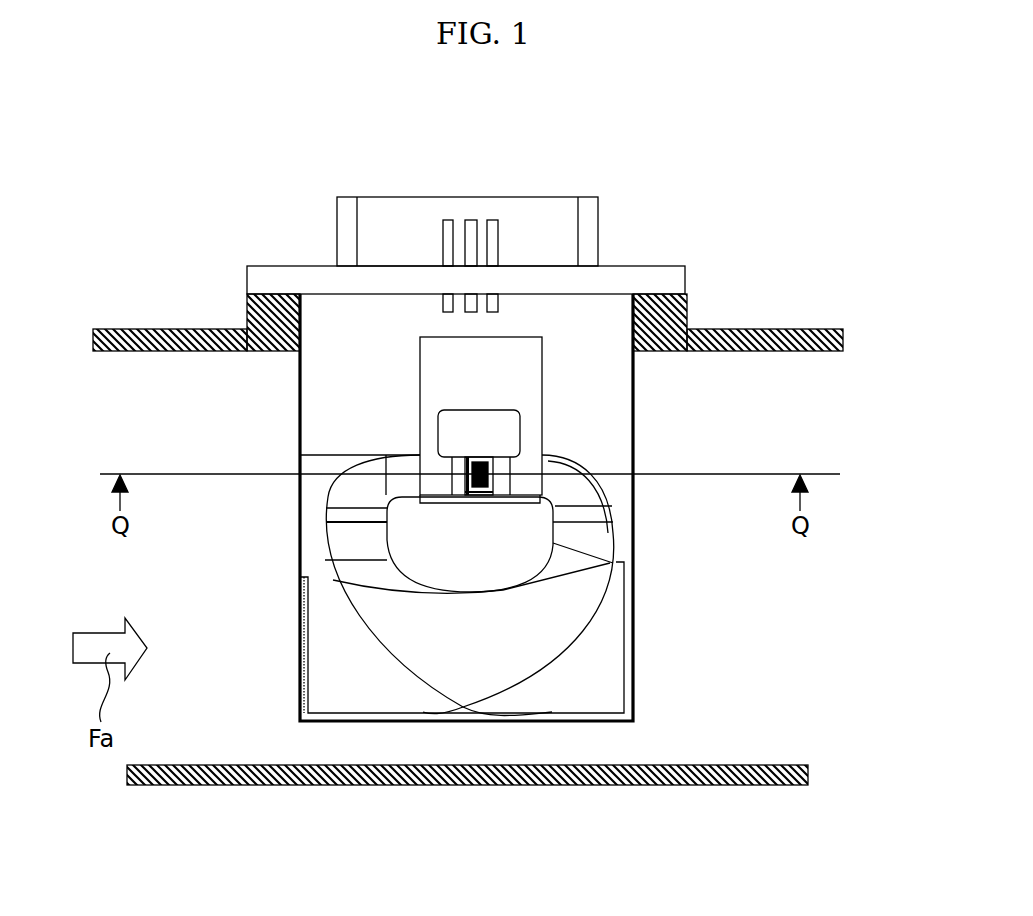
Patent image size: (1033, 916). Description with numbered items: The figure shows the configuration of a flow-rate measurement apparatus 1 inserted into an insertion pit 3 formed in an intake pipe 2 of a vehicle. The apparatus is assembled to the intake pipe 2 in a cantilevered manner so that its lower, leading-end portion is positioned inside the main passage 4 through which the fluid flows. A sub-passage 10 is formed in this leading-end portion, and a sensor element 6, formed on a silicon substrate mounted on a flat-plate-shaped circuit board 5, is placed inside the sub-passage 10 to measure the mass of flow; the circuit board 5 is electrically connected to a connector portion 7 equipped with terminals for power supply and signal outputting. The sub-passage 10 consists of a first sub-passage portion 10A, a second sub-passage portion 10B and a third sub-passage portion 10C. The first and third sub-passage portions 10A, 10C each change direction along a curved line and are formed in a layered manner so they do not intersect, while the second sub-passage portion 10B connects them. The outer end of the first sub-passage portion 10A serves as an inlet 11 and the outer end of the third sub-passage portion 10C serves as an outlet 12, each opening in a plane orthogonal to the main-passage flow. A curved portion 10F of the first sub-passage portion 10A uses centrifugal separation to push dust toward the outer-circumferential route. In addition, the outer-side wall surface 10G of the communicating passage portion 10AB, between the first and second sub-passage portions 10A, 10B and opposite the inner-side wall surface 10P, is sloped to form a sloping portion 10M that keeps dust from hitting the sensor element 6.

The flow-rate measurement apparatus 1 is at (272, 265).
The intake pipe 2 is at (783, 329).
The insertion pit 3 is at (630, 317).
The main passage 4 is at (125, 370).
The circuit board 5 is at (420, 370).
The sensor element 6 is at (470, 470).
The connector portion 7 is at (536, 197).
The sub-passage 10 is at (325, 663).
The first sub-passage portion 10A is at (575, 597).
The communicating passage portion 10AB is at (578, 508).
The second sub-passage portion 10B is at (540, 473).
The third sub-passage portion 10C is at (352, 583).
The curved-line portion 10F is at (568, 640).
The outer-side wall surface 10G is at (560, 467).
The sloping portion 10M is at (603, 473).
The inner-side wall surface 10P is at (553, 503).
The inlet 11 is at (302, 694).
The outlet 12 is at (630, 691).